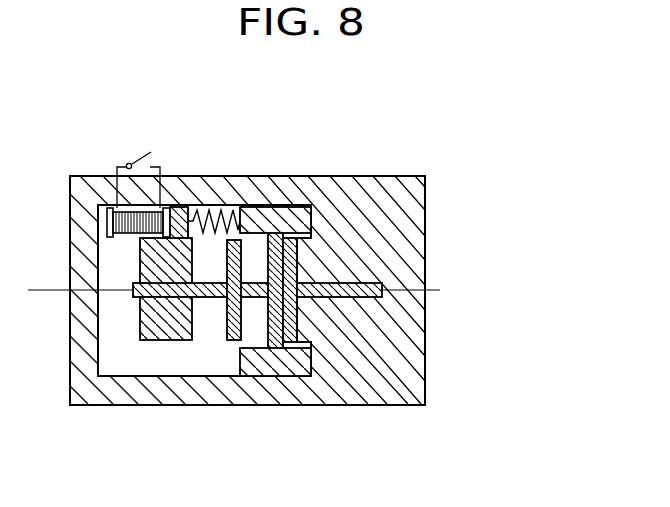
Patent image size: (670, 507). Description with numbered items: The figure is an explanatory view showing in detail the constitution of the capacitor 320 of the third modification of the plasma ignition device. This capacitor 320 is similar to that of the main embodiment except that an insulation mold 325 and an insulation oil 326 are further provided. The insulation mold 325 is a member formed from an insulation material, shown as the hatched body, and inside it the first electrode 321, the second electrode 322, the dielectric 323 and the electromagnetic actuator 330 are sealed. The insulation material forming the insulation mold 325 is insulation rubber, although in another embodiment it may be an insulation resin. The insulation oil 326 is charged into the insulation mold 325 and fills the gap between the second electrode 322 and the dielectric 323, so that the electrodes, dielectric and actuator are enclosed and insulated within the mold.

The capacitor 320 is at (305, 286).
The first electrode 321 is at (290, 255).
The second electrode 322 is at (228, 330).
The dielectric 323 is at (272, 367).
The insulation mold 325 is at (395, 362).
The insulation oil 326 is at (177, 369).
The electromagnetic actuator 330 is at (202, 197).